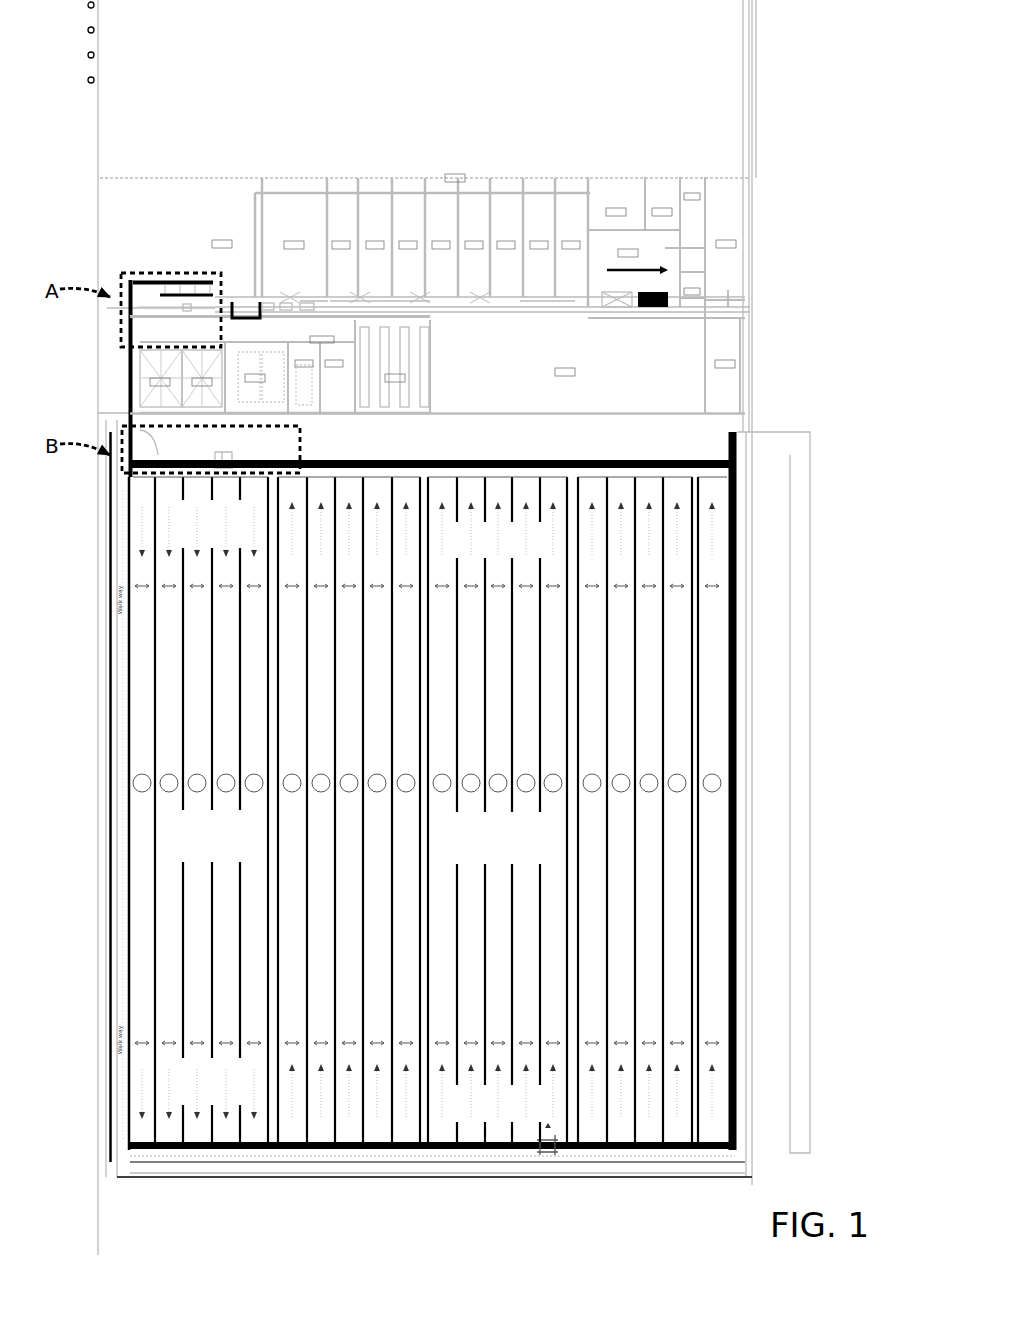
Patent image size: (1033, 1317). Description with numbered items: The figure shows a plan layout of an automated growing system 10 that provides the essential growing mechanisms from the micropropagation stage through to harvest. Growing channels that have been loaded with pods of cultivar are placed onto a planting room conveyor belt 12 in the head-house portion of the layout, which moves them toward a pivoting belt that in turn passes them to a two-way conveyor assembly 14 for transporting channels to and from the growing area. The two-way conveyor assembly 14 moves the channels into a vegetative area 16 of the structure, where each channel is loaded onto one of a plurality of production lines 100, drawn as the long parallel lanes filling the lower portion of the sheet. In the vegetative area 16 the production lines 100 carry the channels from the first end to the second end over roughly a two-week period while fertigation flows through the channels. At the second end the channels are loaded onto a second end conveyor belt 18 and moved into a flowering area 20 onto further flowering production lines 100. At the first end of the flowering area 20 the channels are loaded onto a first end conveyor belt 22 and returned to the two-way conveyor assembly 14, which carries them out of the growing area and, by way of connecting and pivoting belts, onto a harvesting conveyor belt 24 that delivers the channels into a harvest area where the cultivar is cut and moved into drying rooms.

The automated growing system 10 is at (865, 1114).
The planting room conveyor belt 12 is at (177, 318).
The two-way conveyor assembly 14 is at (124, 405).
The vegetative area 16 is at (214, 1175).
The second end conveyor belt 18 is at (297, 1143).
The flowering area 20 is at (535, 1176).
The first end conveyor belt 22 is at (668, 468).
The harvesting conveyor belt 24 is at (183, 283).
The production lines 100 is at (167, 635).